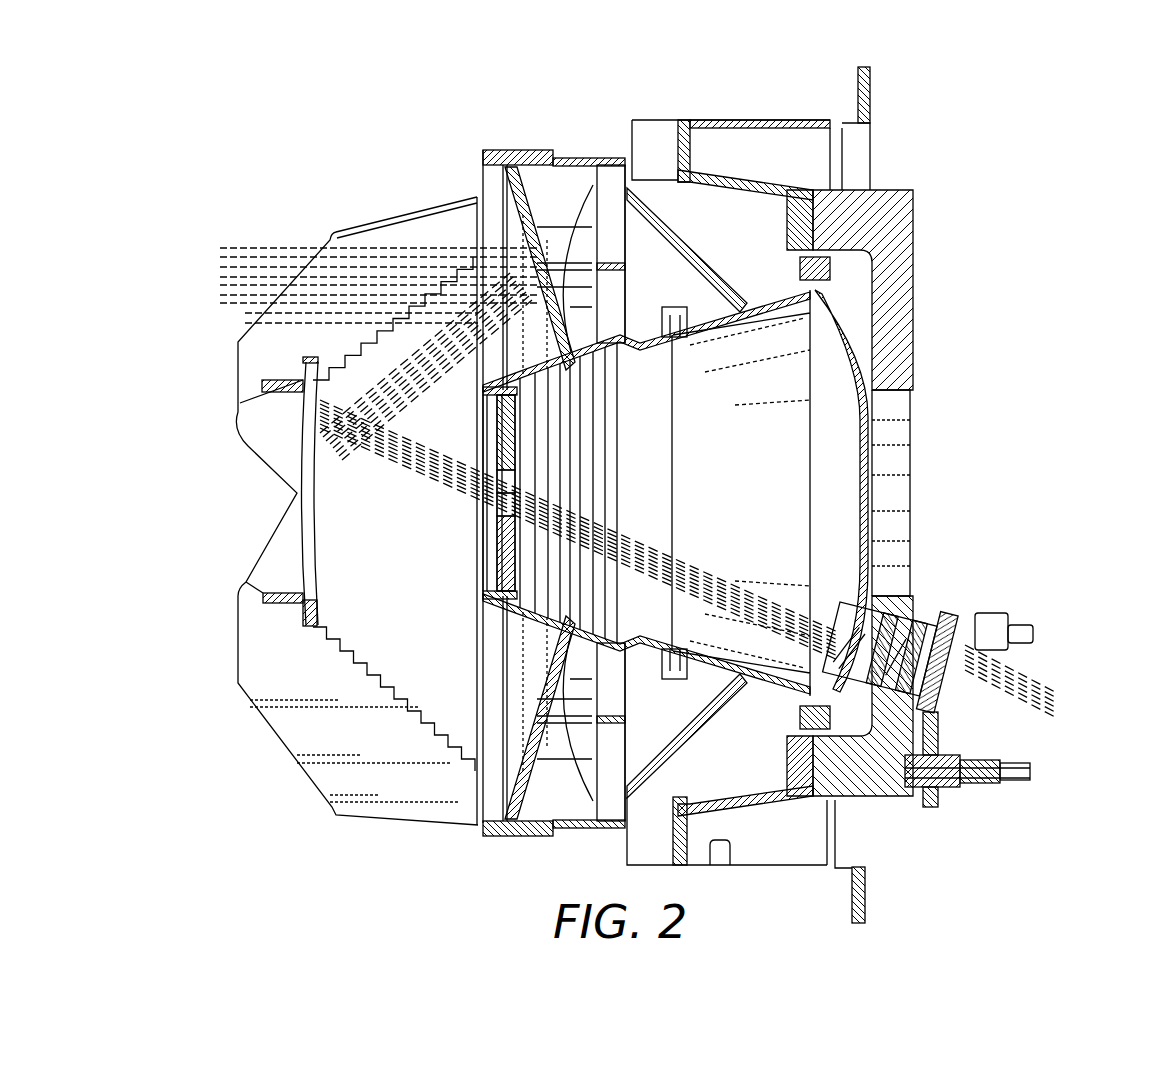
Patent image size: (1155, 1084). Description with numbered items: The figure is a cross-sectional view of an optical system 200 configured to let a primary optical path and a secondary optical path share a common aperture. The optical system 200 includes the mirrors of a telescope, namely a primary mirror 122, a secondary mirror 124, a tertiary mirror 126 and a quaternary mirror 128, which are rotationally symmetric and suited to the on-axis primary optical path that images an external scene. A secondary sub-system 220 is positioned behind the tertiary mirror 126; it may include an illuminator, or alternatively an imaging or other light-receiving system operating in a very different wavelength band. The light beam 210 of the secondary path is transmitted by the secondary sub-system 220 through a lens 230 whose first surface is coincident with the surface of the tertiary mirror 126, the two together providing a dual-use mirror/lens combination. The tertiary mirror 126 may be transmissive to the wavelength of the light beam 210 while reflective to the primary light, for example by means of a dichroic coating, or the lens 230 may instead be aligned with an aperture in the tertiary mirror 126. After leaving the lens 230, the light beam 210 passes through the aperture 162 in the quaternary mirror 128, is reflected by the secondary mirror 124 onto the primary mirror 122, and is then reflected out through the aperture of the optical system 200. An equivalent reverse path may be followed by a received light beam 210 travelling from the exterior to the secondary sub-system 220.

The optical system 200 is at (983, 138).
The light beam 210 is at (287, 248).
The primary mirror 122 is at (497, 775).
The secondary mirror 124 is at (317, 573).
The quaternary mirror 128 is at (510, 430).
The aperture 162 is at (500, 487).
The tertiary mirror 126 is at (825, 315).
The secondary sub-system 220 is at (955, 579).
The lens 230 is at (848, 653).